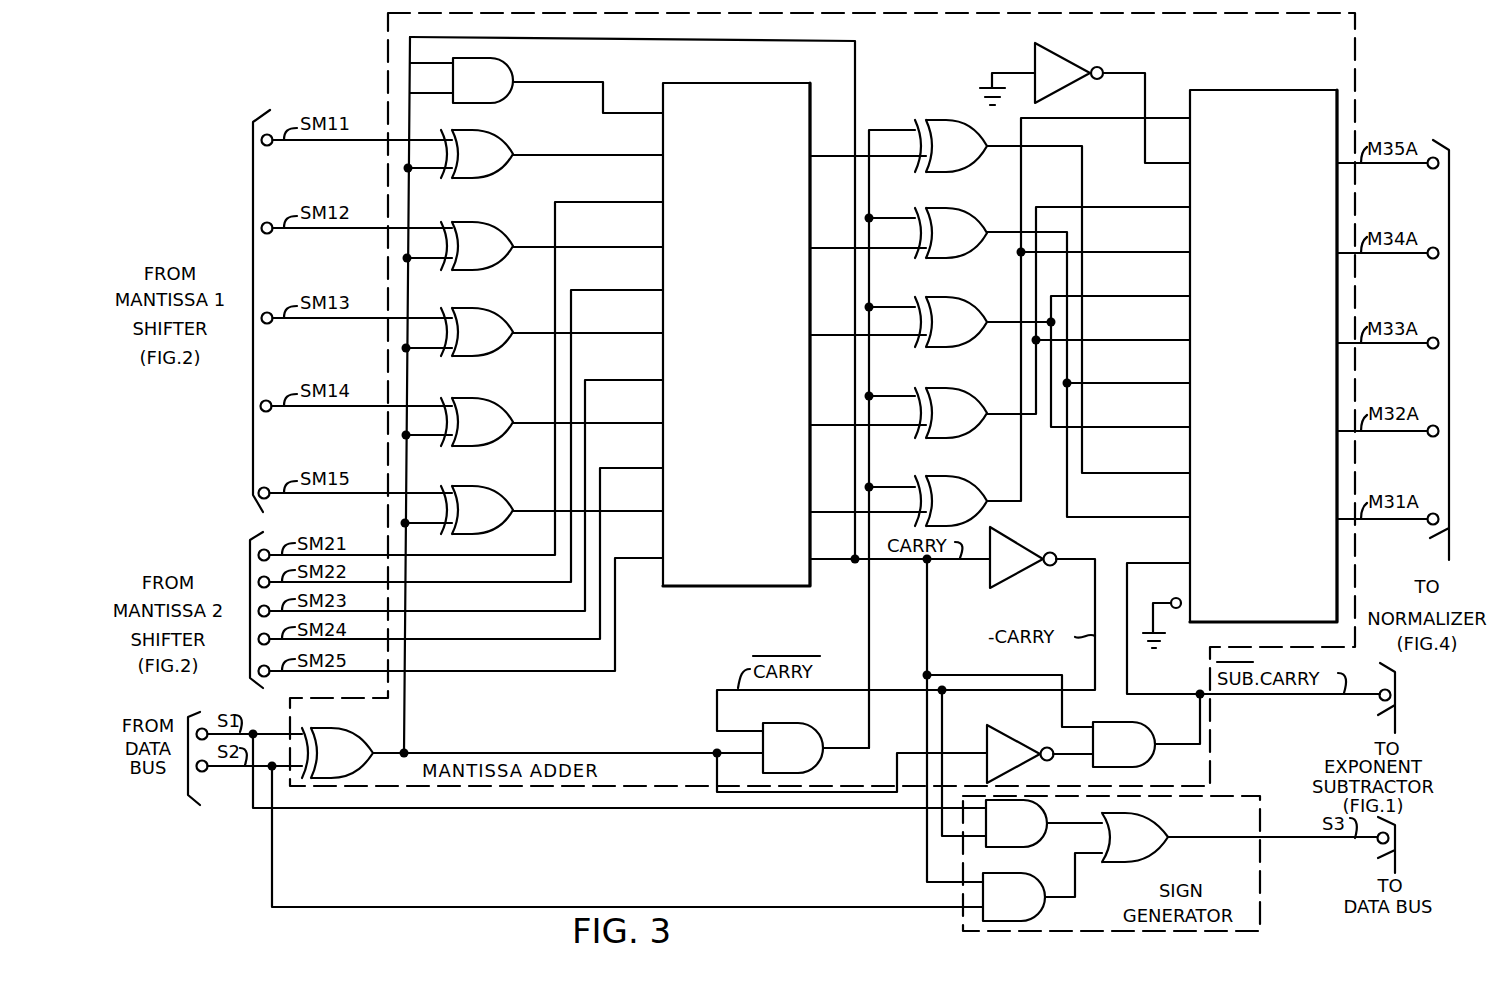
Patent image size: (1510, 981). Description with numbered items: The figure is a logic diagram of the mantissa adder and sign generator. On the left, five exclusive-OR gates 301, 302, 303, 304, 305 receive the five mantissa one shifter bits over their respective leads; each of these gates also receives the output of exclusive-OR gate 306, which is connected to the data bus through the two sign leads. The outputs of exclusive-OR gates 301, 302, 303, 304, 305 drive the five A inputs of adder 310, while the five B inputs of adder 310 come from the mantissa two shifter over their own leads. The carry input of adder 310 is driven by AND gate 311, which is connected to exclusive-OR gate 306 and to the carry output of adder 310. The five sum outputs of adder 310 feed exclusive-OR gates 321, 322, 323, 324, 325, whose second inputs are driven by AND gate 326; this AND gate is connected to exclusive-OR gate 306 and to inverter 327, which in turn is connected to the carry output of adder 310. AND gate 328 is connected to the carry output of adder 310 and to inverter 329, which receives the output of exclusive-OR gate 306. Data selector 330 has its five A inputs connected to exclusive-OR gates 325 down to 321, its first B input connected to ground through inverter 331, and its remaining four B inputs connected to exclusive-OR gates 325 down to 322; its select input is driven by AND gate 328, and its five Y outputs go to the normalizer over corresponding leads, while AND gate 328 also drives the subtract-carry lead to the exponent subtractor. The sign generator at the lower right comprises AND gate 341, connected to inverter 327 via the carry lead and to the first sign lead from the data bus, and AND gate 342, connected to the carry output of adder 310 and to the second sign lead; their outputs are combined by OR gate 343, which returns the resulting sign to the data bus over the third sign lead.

The exclusive-OR gate 301 is at (492, 133).
The exclusive-OR gate 302 is at (492, 225).
The exclusive-OR gate 303 is at (492, 310).
The exclusive-OR gate 304 is at (492, 400).
The exclusive-OR gate 305 is at (492, 488).
The exclusive-OR gate 306 is at (344, 734).
The adder 310 is at (718, 378).
The AND gate 311 is at (505, 65).
The exclusive-OR gate 321 is at (958, 126).
The exclusive-OR gate 322 is at (958, 210).
The exclusive-OR gate 323 is at (951, 300).
The exclusive-OR gate 324 is at (948, 390).
The exclusive-OR gate 325 is at (948, 477).
The AND gate 326 is at (792, 723).
The inverter 327 is at (1005, 537).
The AND gate 328 is at (1128, 724).
The inverter 329 is at (1030, 710).
The data selector 330 is at (1248, 380).
The inverter 331 is at (1070, 58).
The AND gate 341 is at (1012, 847).
The AND gate 342 is at (1042, 910).
The OR gate 343 is at (1151, 827).